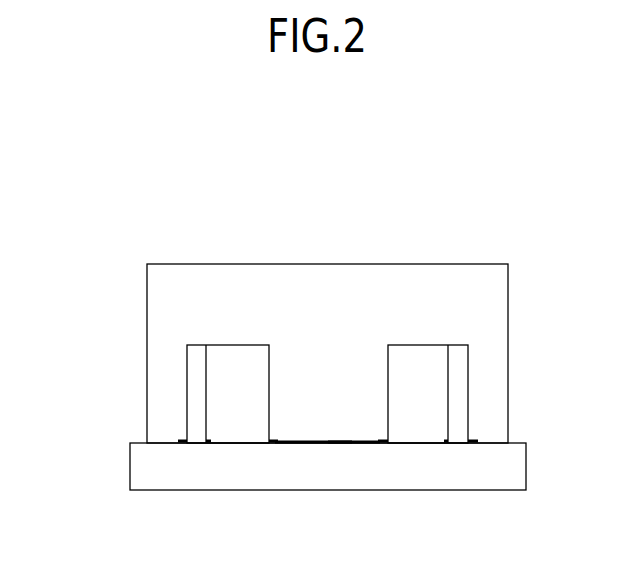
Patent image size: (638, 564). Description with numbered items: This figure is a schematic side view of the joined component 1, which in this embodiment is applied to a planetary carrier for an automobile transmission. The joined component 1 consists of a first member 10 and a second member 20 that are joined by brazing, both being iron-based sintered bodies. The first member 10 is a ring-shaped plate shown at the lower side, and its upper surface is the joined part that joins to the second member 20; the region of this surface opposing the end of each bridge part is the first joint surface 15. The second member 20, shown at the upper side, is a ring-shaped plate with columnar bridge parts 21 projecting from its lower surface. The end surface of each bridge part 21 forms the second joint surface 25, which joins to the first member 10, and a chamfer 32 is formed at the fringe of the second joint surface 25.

The joined component 1 is at (137, 236).
The first member 10 is at (130, 465).
The first joint surface 15 is at (352, 443).
The second member 20 is at (147, 303).
The bridge part 21 is at (160, 375).
The second joint surface 25 is at (386, 440).
The chamfer 32 is at (365, 443).